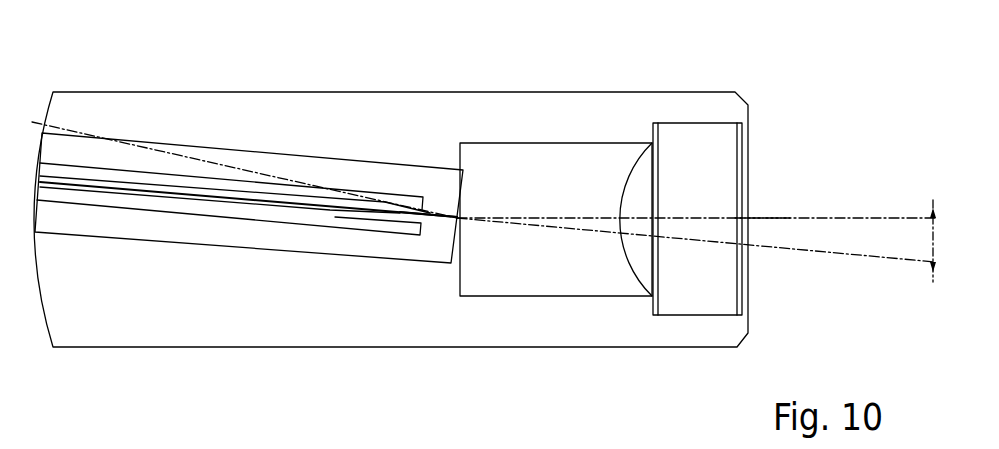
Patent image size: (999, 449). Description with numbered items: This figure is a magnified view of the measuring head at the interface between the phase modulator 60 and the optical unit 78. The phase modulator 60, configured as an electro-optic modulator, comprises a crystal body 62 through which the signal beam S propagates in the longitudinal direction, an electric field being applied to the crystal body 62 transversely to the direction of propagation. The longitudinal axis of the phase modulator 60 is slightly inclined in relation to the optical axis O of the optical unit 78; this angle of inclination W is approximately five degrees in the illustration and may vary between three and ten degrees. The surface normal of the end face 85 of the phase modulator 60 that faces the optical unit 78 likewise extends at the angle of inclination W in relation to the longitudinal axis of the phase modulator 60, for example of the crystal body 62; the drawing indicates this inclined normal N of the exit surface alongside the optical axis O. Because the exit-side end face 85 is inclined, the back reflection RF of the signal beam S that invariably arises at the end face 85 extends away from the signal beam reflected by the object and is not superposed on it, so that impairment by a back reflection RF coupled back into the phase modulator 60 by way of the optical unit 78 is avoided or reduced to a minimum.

The phase modulator 60 is at (268, 131).
The crystal body 62 is at (366, 170).
The optical unit 78 is at (708, 148).
The end face 85 is at (457, 250).
The back reflection RF is at (77, 128).
The signal beam S is at (762, 218).
The optical axis O is at (822, 218).
The normal / tilted axis N is at (803, 250).
The angle of inclination W is at (933, 243).